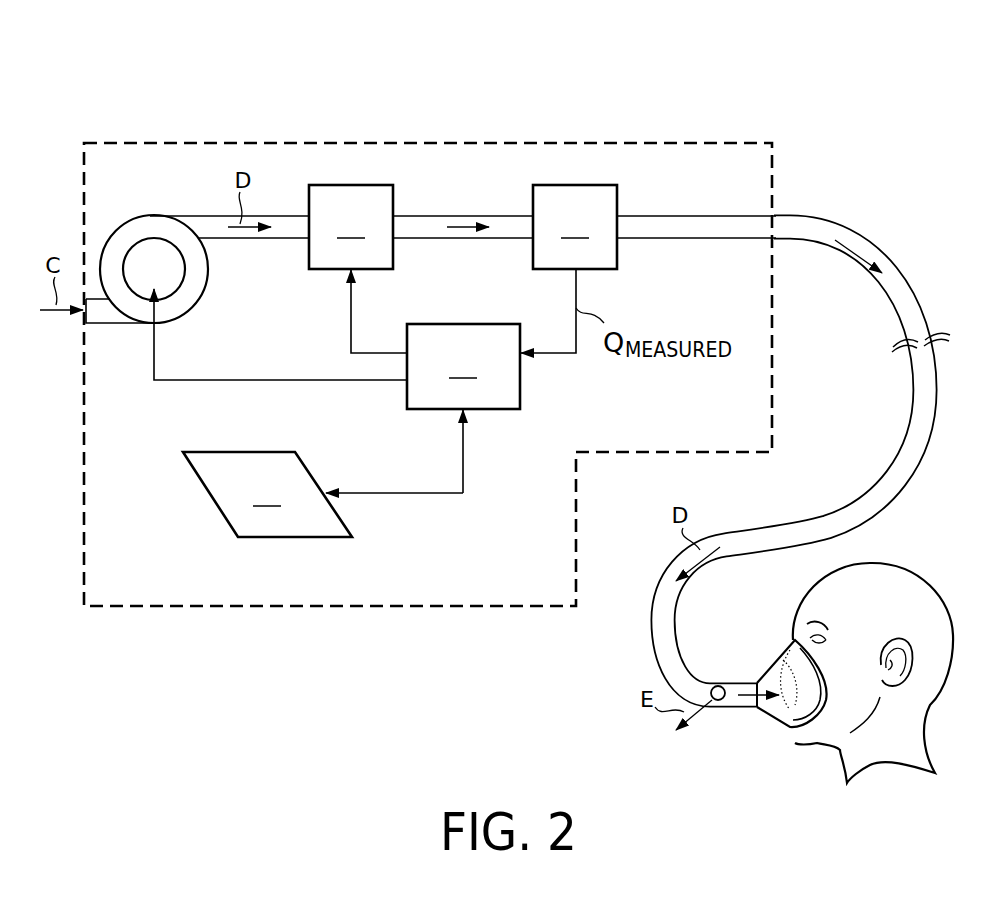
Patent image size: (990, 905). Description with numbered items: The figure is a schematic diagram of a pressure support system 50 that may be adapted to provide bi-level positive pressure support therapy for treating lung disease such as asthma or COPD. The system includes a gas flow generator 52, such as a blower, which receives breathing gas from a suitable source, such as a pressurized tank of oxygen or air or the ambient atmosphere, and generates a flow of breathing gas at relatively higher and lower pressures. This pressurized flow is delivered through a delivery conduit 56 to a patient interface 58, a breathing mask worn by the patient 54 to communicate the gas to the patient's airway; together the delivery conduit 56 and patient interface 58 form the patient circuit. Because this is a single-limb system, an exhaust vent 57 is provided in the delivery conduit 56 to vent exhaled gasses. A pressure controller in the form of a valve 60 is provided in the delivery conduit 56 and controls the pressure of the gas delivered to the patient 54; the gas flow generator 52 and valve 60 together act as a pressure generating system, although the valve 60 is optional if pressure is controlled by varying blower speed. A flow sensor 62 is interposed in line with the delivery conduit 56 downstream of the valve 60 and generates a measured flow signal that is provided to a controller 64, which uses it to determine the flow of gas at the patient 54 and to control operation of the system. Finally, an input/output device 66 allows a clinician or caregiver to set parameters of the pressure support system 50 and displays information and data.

The pressure support system 50 is at (160, 124).
The gas flow generator 52 is at (146, 214).
The patient 54 is at (935, 578).
The delivery conduit 56 is at (843, 228).
The exhaust vent 57 is at (722, 702).
The patient interface 58 is at (780, 723).
The valve 60 is at (351, 227).
The flow sensor 62 is at (575, 227).
The controller 64 is at (463, 366).
The input/output device 66 is at (267, 494).